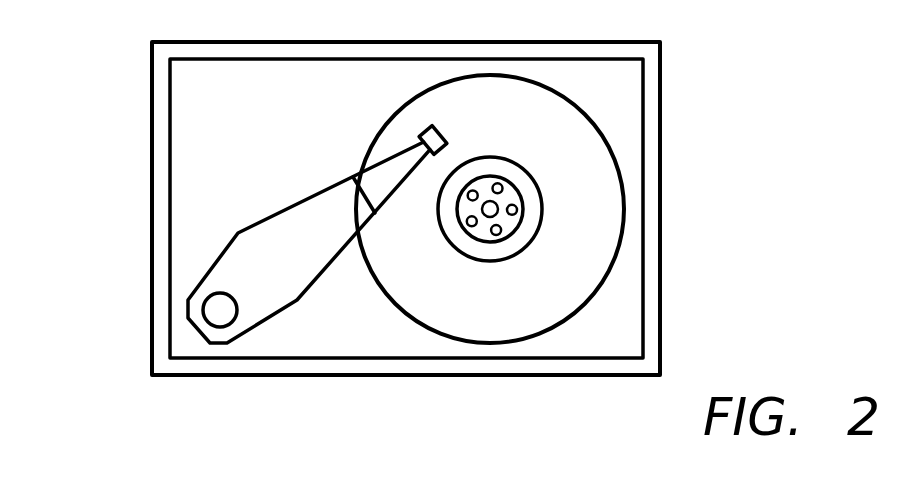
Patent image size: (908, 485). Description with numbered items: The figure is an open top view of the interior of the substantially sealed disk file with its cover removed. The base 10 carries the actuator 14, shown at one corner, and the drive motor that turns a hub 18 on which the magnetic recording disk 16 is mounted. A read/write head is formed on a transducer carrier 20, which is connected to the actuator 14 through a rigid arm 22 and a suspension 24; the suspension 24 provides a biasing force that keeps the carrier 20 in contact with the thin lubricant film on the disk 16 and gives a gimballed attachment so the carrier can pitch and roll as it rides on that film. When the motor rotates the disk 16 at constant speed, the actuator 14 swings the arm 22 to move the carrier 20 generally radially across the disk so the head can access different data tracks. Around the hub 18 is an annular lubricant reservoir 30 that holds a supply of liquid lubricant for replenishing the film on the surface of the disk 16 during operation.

The base 10 is at (650, 133).
The actuator 14 is at (222, 310).
The magnetic recording disk 16 is at (507, 117).
The hub 18 is at (508, 195).
The transducer carrier 20 is at (425, 152).
The rigid arm 22 is at (297, 243).
The suspension 24 is at (388, 175).
The annular lubricant reservoir 30 is at (523, 233).